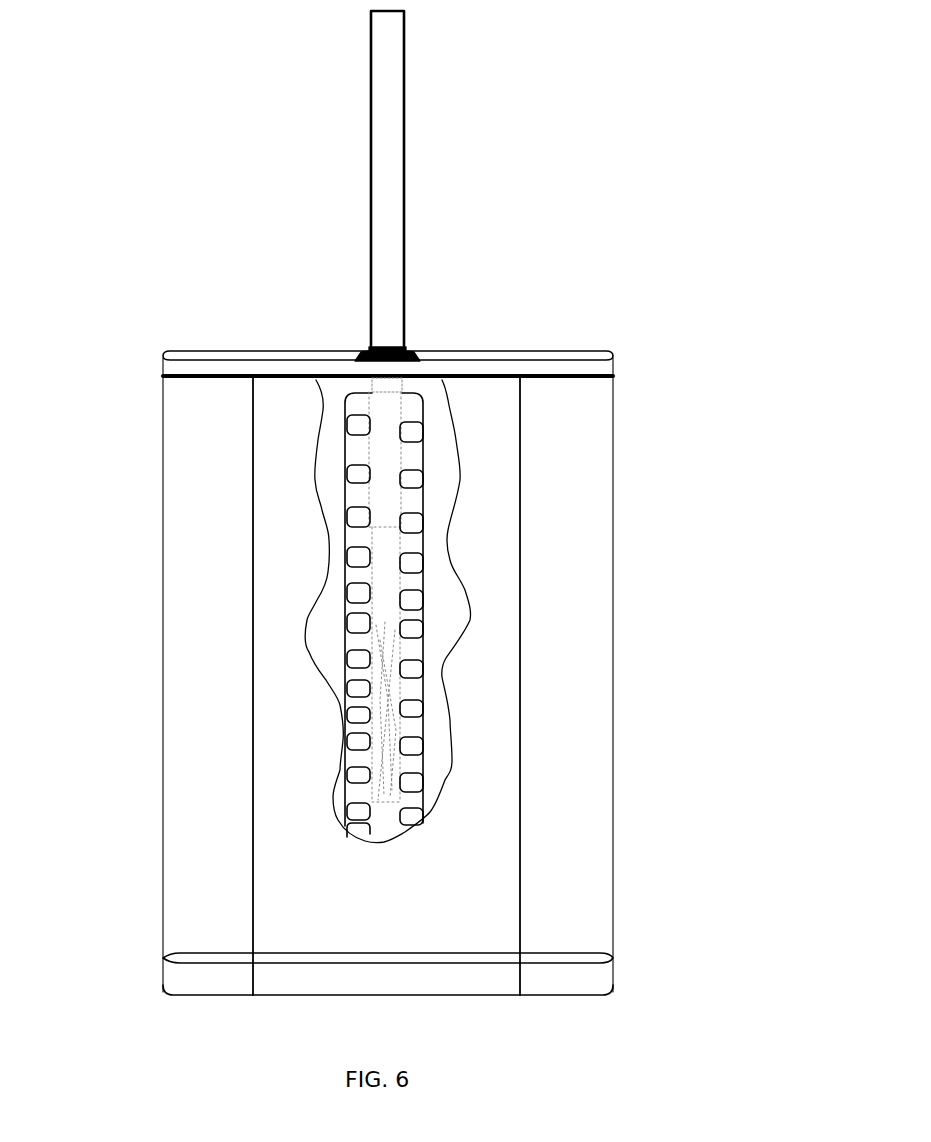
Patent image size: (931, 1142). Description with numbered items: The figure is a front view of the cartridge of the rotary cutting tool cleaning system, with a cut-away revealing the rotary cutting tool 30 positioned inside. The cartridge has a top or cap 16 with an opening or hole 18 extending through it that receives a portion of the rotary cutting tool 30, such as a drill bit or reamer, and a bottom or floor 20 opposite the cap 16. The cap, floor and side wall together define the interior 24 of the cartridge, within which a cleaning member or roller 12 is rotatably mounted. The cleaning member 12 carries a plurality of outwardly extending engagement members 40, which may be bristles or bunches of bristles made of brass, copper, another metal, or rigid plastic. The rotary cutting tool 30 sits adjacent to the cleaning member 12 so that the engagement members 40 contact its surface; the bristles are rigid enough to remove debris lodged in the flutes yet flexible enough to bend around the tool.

The cleaning member 12 is at (443, 423).
The top or cap 16 is at (570, 355).
The opening or hole 18 is at (405, 352).
The bottom or floor 20 is at (613, 978).
The interior 24 is at (353, 393).
The rotary cutting tool 30 is at (395, 100).
The engagement members 40 is at (348, 480).